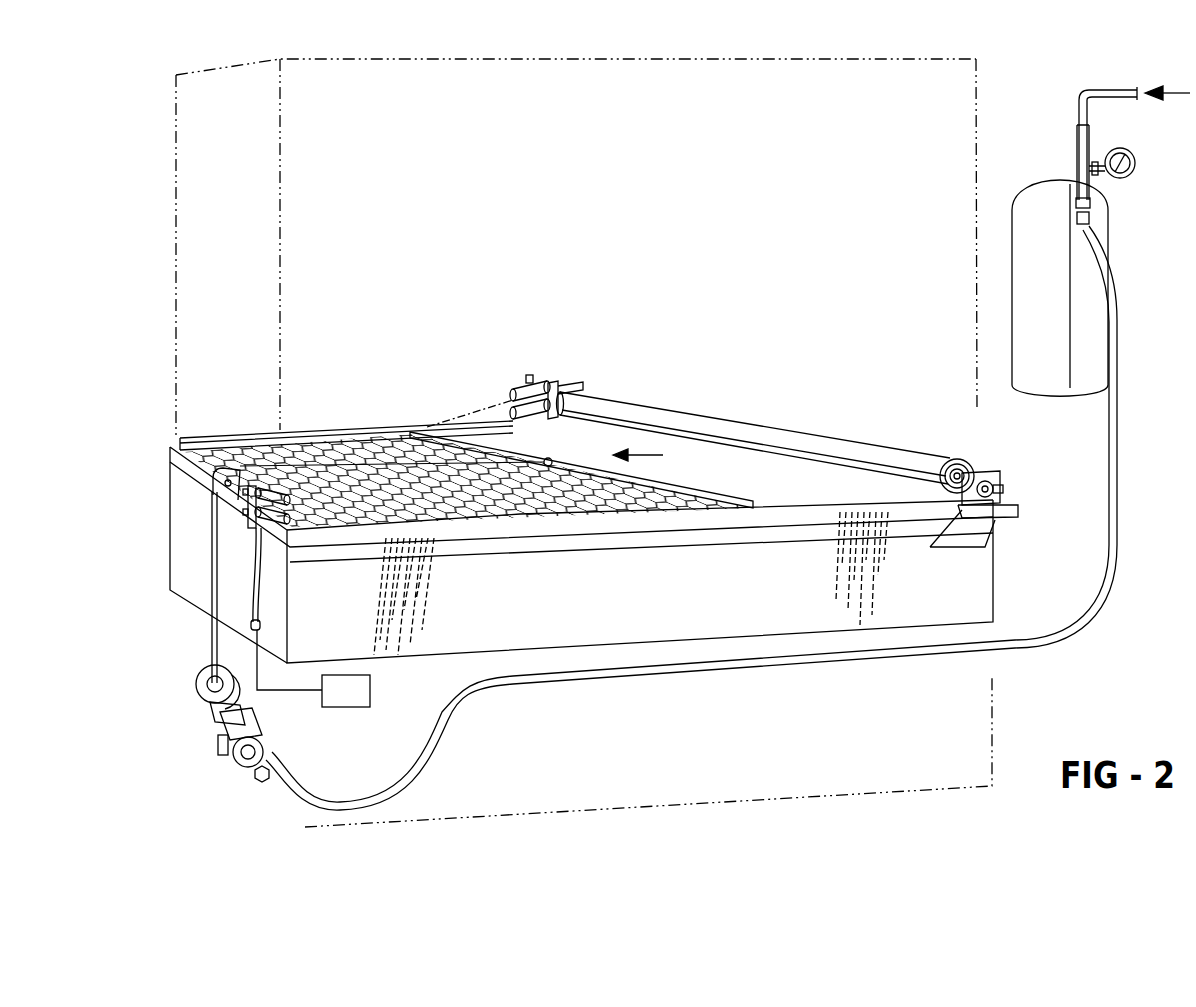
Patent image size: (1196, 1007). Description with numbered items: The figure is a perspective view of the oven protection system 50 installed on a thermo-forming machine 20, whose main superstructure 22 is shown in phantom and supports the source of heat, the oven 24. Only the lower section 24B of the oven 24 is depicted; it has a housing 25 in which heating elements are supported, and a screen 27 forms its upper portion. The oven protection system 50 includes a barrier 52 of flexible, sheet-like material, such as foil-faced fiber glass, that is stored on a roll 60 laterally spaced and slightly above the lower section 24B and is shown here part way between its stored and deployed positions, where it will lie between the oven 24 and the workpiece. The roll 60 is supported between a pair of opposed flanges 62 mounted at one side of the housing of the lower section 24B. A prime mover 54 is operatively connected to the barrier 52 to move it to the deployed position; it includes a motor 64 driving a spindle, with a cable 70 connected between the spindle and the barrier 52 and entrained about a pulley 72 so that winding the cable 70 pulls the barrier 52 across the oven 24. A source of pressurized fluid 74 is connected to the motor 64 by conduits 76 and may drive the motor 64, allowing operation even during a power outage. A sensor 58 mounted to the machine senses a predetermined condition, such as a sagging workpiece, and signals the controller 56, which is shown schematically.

The thermo-forming machine 20 is at (514, 32).
The main superstructure 22 is at (625, 58).
The oven 24 is at (627, 560).
The lower oven section 24B is at (727, 601).
The housing 25 is at (888, 604).
The screen 27 is at (350, 450).
The oven protection system 50 is at (648, 432).
The barrier 52 is at (697, 467).
The prime mover 54 is at (204, 733).
The controller 56 is at (349, 716).
The sensor 58 is at (545, 386).
The roll 60 is at (968, 460).
The opposed flanges 62 is at (575, 382).
The motor 64 is at (230, 745).
The cable 70 is at (213, 623).
The pulley 72 is at (237, 497).
The source of pressurized fluid 74 is at (1098, 240).
The conduits 76 is at (1087, 598).